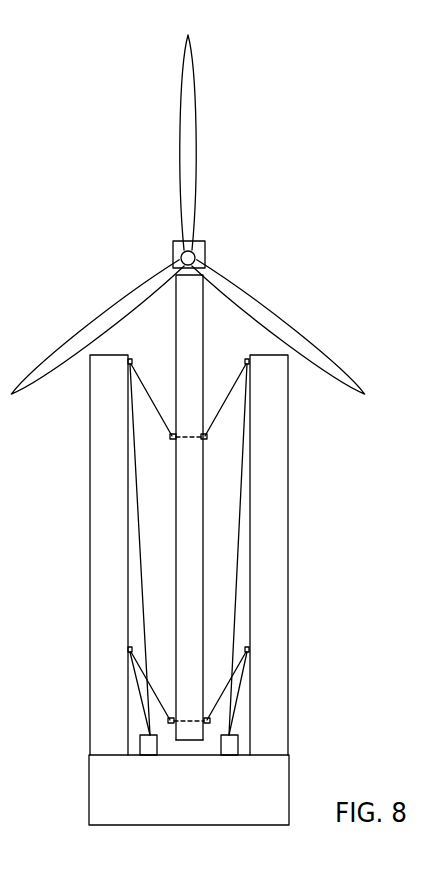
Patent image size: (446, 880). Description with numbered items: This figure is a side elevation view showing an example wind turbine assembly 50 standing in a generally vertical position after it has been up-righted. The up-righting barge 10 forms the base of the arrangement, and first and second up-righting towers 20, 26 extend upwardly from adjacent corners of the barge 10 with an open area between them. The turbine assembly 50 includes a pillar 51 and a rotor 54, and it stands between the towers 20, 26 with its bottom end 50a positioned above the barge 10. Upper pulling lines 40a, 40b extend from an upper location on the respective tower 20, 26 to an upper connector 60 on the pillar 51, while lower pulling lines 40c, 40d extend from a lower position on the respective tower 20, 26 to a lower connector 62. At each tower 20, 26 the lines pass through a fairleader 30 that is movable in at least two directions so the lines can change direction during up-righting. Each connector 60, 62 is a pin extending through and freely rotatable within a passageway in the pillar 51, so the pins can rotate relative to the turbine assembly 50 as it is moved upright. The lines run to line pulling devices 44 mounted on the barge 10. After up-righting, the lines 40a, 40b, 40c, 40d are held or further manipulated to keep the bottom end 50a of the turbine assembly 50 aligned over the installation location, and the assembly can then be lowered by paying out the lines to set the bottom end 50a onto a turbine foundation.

The up-righting barge 10 is at (156, 797).
The first up-righting tower 20 is at (85, 555).
The second up-righting tower 26 is at (297, 555).
The fairleader 30 is at (131, 357).
The upper pulling line 40a is at (140, 380).
The upper pulling line 40b is at (233, 388).
The lower pulling line 40c is at (103, 693).
The lower pulling line 40d is at (279, 693).
The line pulling device 44 is at (132, 768).
The wind turbine assembly 50 is at (224, 243).
The bottom end of the turbine assembly 50a is at (207, 675).
The pillar 51 is at (202, 308).
The rotor 54 is at (187, 218).
The upper connector 60 is at (190, 440).
The lower connector 62 is at (253, 746).